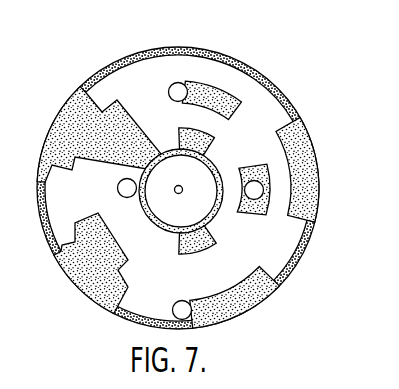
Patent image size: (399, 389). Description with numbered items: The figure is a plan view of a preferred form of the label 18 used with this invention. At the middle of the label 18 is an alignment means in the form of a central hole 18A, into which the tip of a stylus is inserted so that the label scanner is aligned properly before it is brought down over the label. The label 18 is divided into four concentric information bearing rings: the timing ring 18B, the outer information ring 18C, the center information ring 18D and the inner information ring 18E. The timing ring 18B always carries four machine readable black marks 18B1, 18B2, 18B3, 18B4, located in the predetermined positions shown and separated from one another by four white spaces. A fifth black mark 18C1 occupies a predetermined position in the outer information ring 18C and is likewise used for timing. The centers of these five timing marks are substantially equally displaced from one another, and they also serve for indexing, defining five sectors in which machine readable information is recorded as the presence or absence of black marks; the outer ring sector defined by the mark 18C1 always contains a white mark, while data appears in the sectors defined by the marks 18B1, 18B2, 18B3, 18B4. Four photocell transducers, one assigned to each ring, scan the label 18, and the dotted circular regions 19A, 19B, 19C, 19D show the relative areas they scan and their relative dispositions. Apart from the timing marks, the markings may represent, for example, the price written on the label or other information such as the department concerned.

The label 18 is at (281, 98).
The central hole 18A is at (175, 191).
The timing ring 18B is at (331, 170).
The black mark 18B1 is at (307, 193).
The black mark 18B2 is at (244, 309).
The black mark 18B3 is at (78, 277).
The black mark 18B4 is at (70, 117).
The outer information ring 18C is at (273, 212).
The black mark 18C1 is at (221, 88).
The center information ring 18D is at (270, 222).
The inner information ring 18E is at (221, 212).
The dotted circular region 19A is at (181, 301).
The dotted circular region 19B is at (172, 82).
The dotted circular region 19C is at (245, 190).
The dotted circular region 19D is at (118, 192).